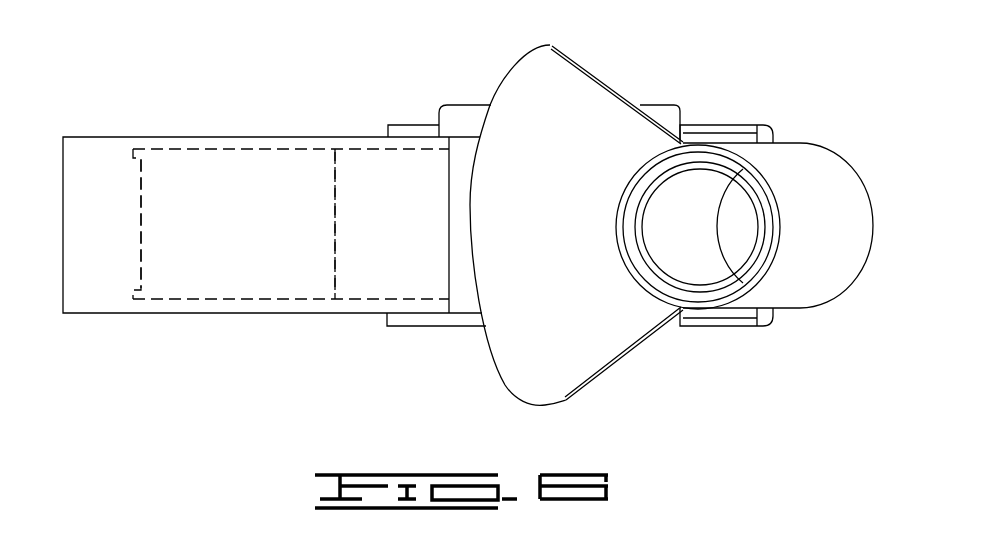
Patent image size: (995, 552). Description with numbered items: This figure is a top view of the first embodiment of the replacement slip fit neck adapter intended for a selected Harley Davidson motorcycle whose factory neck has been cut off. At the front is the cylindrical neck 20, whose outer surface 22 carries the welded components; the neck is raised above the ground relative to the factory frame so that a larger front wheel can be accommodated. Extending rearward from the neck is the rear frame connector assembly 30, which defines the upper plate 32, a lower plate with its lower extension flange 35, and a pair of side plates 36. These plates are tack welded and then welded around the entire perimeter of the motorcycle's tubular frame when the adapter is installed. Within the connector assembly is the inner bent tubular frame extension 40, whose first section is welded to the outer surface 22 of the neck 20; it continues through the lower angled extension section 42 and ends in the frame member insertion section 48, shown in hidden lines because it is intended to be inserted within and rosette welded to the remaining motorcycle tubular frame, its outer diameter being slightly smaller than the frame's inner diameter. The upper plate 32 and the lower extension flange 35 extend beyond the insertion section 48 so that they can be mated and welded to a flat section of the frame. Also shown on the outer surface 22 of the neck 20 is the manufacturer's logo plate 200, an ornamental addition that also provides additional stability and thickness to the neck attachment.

The cylindrical neck 20 is at (793, 160).
The outer surface 22 is at (690, 260).
The rear frame connector assembly 30 is at (415, 130).
The upper plate 32 is at (460, 145).
The lower extension flange 35 is at (112, 147).
The side plates 36 is at (435, 327).
The inner bent tubular frame extension 40 is at (368, 163).
The lower angled extension section 42 is at (378, 283).
The frame member insertion section 48 is at (236, 285).
The manufacturer's logo plate 200 is at (530, 238).